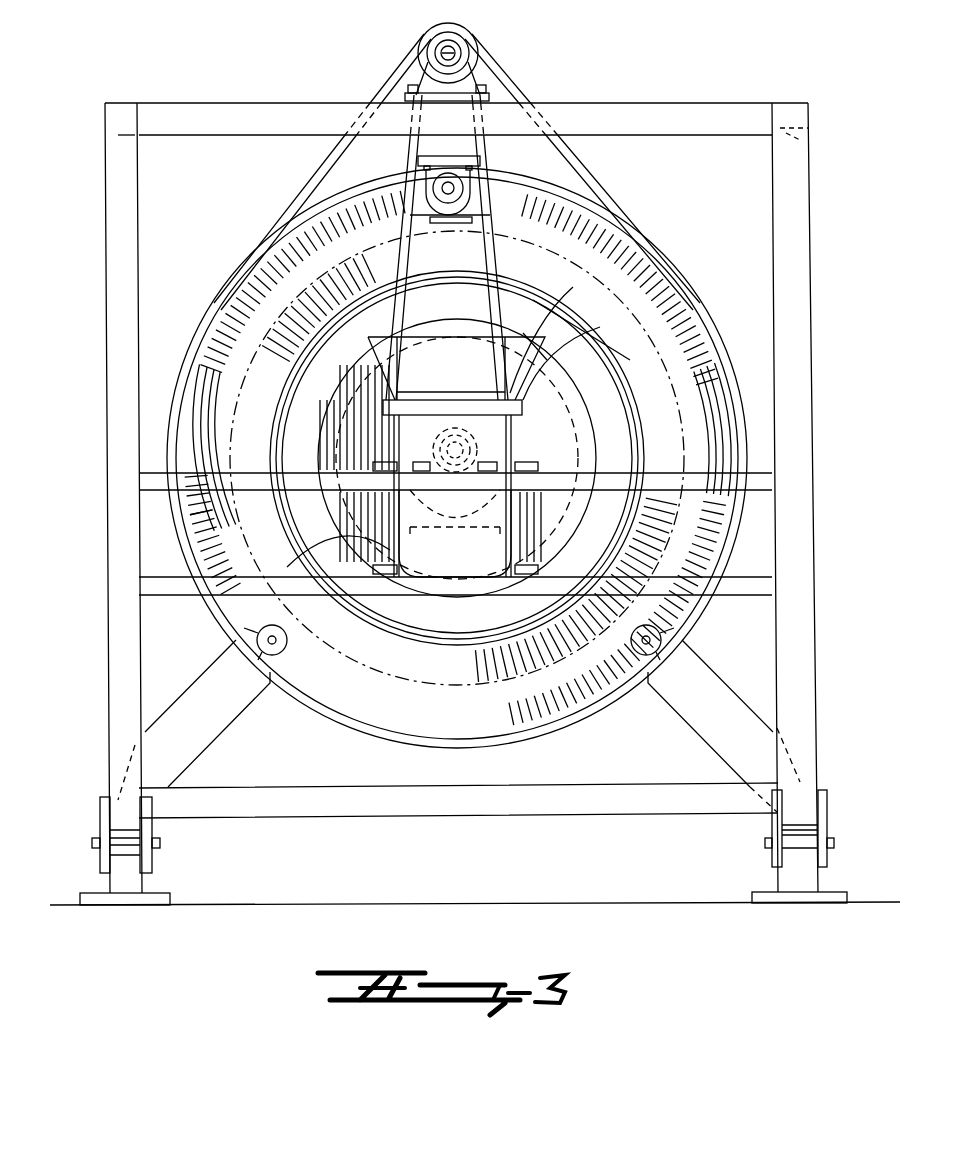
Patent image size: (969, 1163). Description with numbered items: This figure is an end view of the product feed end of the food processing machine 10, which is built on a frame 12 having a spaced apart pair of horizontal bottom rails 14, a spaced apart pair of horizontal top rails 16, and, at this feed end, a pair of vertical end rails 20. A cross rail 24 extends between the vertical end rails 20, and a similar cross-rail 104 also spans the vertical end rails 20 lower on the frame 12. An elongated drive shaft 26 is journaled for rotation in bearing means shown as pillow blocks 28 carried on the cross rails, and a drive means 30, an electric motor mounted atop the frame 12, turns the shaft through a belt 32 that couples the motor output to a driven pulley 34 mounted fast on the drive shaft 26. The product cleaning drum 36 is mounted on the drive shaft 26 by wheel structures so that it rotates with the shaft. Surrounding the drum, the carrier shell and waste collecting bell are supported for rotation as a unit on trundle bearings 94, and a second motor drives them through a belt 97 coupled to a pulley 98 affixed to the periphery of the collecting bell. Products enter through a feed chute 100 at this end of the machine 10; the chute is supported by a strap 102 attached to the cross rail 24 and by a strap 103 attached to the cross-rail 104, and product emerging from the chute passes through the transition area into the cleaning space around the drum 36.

The food processing machine 10 is at (236, 62).
The frame 12 is at (270, 95).
The horizontal bottom rails 14 is at (100, 780).
The horizontal top rails 16 is at (100, 160).
The vertical end rails 20 is at (795, 352).
The cross rail 24 is at (766, 492).
The drive shaft 26 is at (505, 432).
The pillow blocks 28 is at (522, 406).
The drive means 30 is at (478, 30).
The belt 32 is at (503, 245).
The driven pulley 34 is at (470, 540).
The product cleaning drum 36 is at (600, 390).
The trundle bearings 94 is at (467, 197).
The belt 97 is at (582, 158).
The pulley 98 is at (690, 297).
The feed chute 100 is at (558, 292).
The strap 102 is at (587, 331).
The strap 103 is at (345, 540).
The cross-rail 104 is at (738, 596).